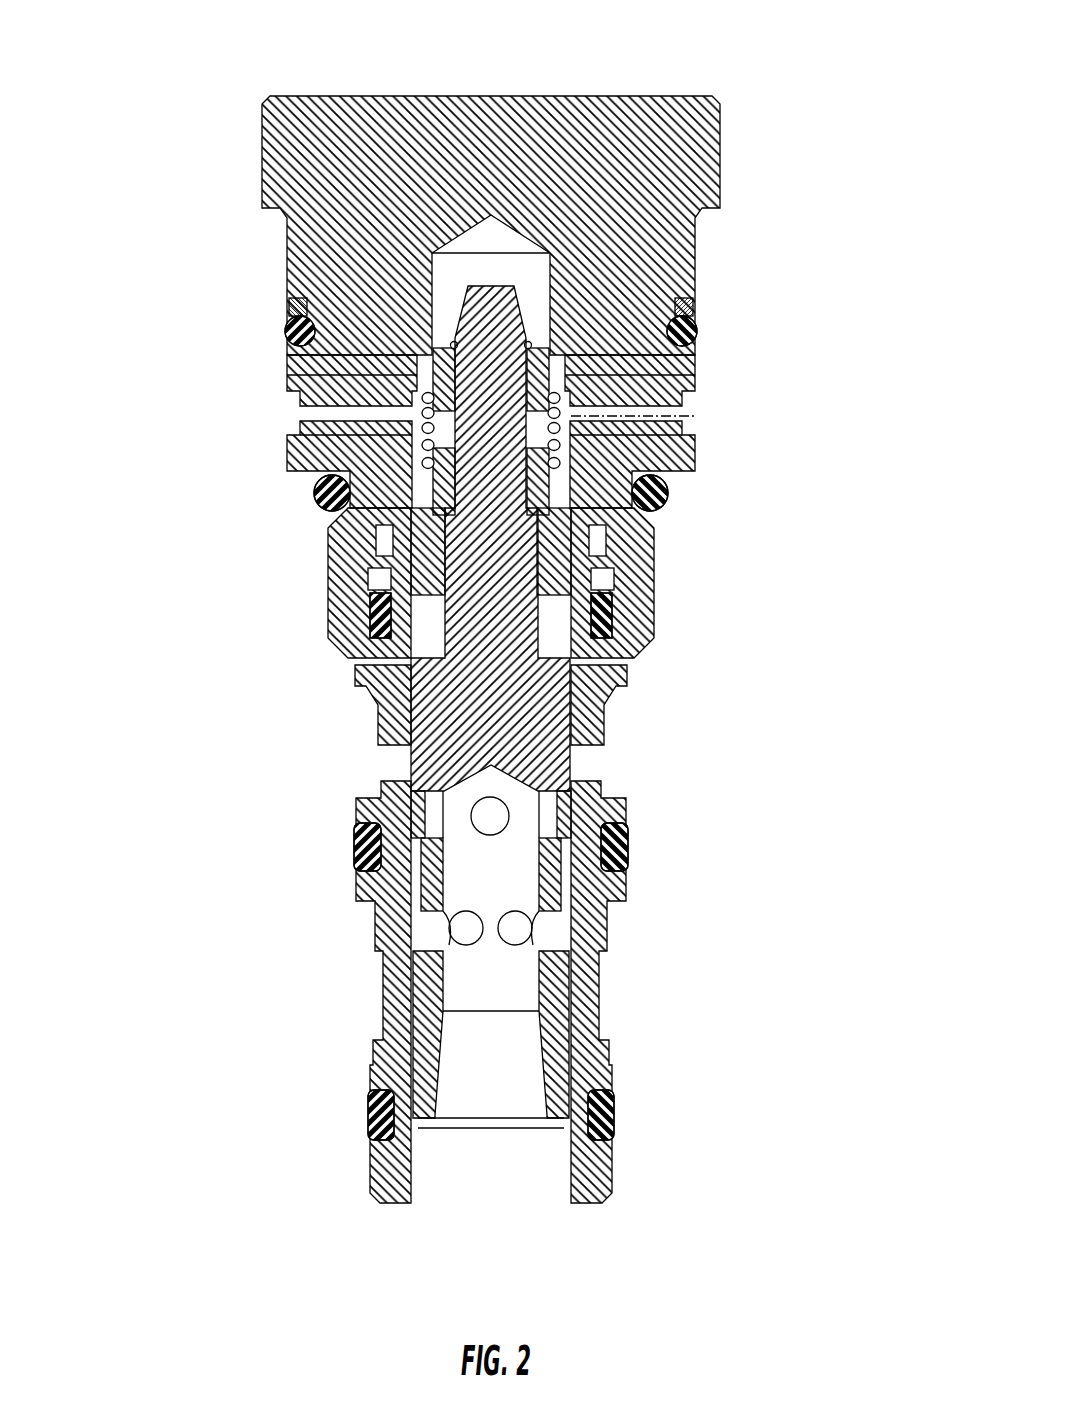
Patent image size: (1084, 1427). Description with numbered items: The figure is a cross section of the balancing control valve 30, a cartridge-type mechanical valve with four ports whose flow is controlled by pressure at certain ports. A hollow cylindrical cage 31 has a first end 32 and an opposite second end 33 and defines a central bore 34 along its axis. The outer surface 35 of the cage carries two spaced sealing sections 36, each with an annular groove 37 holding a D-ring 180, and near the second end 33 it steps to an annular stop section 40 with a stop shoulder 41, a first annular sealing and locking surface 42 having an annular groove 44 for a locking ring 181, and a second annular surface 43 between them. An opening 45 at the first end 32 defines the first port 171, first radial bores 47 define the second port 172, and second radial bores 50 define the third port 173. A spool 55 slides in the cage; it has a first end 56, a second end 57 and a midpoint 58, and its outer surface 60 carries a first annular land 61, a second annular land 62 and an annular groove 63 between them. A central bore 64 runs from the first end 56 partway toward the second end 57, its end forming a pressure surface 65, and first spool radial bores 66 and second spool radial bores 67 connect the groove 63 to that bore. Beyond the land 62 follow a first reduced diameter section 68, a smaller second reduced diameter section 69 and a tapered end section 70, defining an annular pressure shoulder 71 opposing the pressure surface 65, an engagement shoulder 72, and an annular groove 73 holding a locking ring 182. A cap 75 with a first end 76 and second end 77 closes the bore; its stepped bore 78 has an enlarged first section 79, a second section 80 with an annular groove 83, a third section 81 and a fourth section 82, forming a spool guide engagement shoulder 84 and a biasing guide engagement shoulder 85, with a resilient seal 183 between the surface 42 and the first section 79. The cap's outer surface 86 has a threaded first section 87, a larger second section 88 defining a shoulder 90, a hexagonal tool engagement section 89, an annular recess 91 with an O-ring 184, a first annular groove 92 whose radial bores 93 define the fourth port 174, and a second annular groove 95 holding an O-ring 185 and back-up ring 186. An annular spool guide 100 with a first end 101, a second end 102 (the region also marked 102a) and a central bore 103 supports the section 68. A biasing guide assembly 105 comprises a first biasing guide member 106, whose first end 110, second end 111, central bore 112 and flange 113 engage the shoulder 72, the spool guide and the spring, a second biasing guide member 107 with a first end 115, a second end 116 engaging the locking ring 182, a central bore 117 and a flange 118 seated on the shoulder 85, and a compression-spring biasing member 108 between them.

The balancing control valve 30 is at (836, 84).
The cage 31 is at (600, 1182).
The first end 32 is at (585, 1193).
The second end 33 is at (335, 580).
The central bore 34 is at (563, 1157).
The outer surface 35 is at (600, 1040).
The sealing sections 36 is at (668, 800).
The annular groove 37 is at (614, 838).
The annular stop section 40 is at (585, 680).
The annular stop surface or shoulder 41 is at (600, 660).
The first annular sealing and locking surface 42 is at (640, 580).
The second annular surface 43 is at (625, 640).
The annular groove 44 is at (600, 560).
The opening 45 is at (404, 1178).
The first radial bores 47 is at (378, 1000).
The second radial bores 50 is at (372, 780).
The spool 55 is at (407, 1052).
The first end 56 is at (418, 1107).
The second end 57 is at (493, 283).
The midpoint 58 is at (372, 710).
The outer surface 60 is at (376, 960).
The first annular land 61 is at (410, 1032).
The second annular land 62 is at (372, 745).
The annular groove 63 is at (428, 905).
The central bore 64 is at (530, 1073).
The pressure surface 65 is at (470, 765).
The first spool radial bores 66 is at (507, 938).
The second spool radial bores 67 is at (482, 827).
The first reduced diameter section 68 is at (362, 690).
The second reduced diameter section 69 is at (343, 522).
The tapered end section 70 is at (516, 300).
The annular pressure surface or shoulder 71 is at (583, 765).
The annular engagement shoulder 72 is at (385, 560).
The annular groove 73 is at (545, 318).
The cap 75 is at (345, 103).
The first end 76 is at (345, 660).
The second end 77 is at (408, 90).
The stepped bore 78 is at (600, 348).
The first section 79 is at (332, 628).
The second section 80 is at (362, 606).
The third section 81 is at (340, 455).
The fourth section 82 is at (413, 235).
The annular groove 83 is at (360, 585).
The spool guide engagement shoulder 84 is at (560, 455).
The biasing guide engagement shoulder 85 is at (676, 325).
The outer surface 86 is at (688, 230).
The threaded first section 87 is at (645, 620).
The second section 88 is at (560, 345).
The tool engagement section 89 is at (711, 112).
The shoulder 90 is at (648, 478).
The annular recess 91 is at (560, 522).
The first annular groove 92 is at (300, 443).
The radial bores 93 is at (292, 425).
The second annular groove 95 is at (281, 262).
The annular spool guide 100 is at (362, 612).
The first end 101 is at (590, 700).
The second end 102 is at (600, 445).
The spring lower end 102a is at (625, 503).
The central bore 103 is at (604, 606).
The biasing guide assembly 105 is at (565, 388).
The first annular biasing guide member 106 is at (352, 503).
The second annular biasing guide member 107 is at (283, 392).
The biasing member 108 is at (316, 485).
The first end 110 is at (385, 540).
The second end 111 is at (690, 404).
The central bore 112 is at (586, 400).
The flange 113 is at (565, 420).
The first end 115 is at (560, 366).
The second end 116 is at (452, 333).
The central bore 117 is at (426, 348).
The flange 118 is at (412, 366).
The first port 171 is at (481, 1212).
The second port 172 is at (612, 970).
The third port 173 is at (610, 745).
The fourth port 174 is at (277, 402).
The D-ring 180 is at (612, 852).
The locking ring 181 is at (582, 540).
The locking ring 182 is at (684, 297).
The resilient annular seal 183 is at (605, 590).
The O-ring 184 is at (680, 470).
The O-ring 185 is at (288, 320).
The back-up ring 186 is at (281, 296).